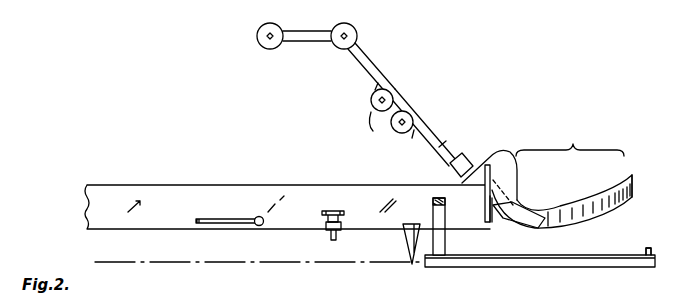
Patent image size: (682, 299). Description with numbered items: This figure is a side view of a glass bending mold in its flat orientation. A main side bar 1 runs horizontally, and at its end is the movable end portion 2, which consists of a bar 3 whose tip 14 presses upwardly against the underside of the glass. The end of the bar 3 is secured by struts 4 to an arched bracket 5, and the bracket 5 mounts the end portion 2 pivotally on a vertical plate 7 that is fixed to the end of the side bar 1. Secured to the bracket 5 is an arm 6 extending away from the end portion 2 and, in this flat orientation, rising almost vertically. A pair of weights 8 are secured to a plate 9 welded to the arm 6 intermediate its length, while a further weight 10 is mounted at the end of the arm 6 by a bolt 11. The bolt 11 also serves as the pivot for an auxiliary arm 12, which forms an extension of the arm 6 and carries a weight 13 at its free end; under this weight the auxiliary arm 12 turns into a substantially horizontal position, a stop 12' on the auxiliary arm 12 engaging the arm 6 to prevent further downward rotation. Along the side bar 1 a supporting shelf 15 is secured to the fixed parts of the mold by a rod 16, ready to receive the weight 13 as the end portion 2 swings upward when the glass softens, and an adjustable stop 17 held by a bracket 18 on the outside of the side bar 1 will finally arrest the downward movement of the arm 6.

The main side bar 1 is at (179, 168).
The movable end portion 2 is at (562, 176).
The bar 3 is at (585, 220).
The strut 4 is at (530, 211).
The arched bracket 5 is at (494, 153).
The arm 6 is at (437, 131).
The vertical plate 7 is at (484, 188).
The weight 8 is at (391, 129).
The plate 9 is at (371, 94).
The weight 10 is at (356, 38).
The bolt 11 is at (352, 33).
The auxiliary arm 12 is at (307, 24).
The stop 12' is at (354, 69).
The weight 13 is at (257, 35).
The tip 14 is at (632, 174).
The supporting shelf 15 is at (222, 218).
The rod 16 is at (258, 226).
The adjustable stop 17 is at (334, 211).
The bracket 18 is at (338, 233).